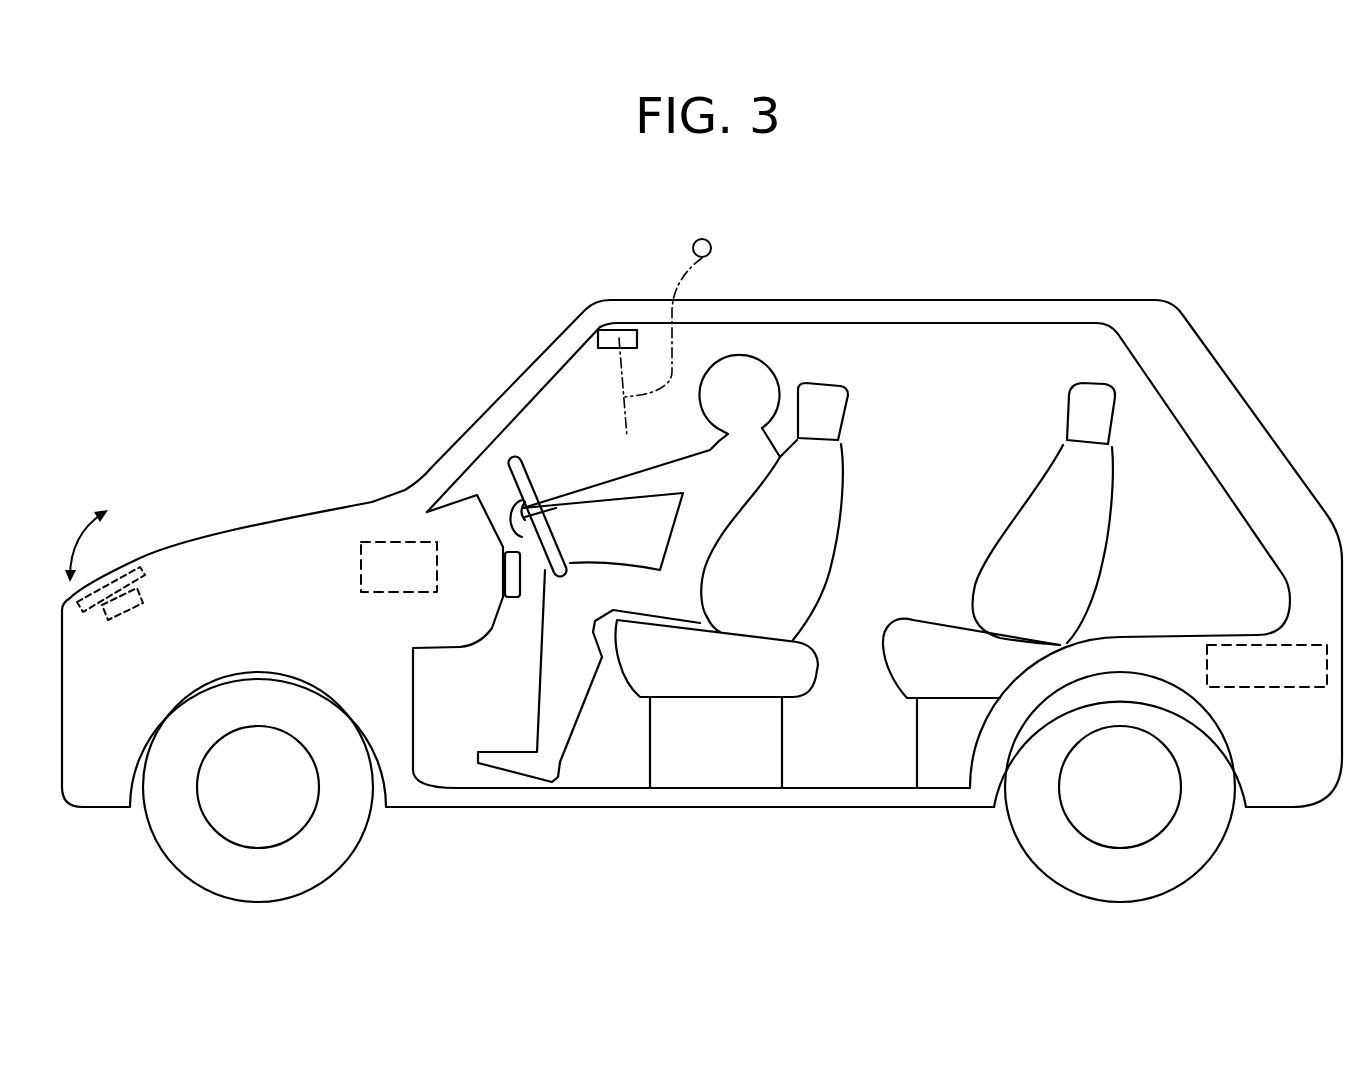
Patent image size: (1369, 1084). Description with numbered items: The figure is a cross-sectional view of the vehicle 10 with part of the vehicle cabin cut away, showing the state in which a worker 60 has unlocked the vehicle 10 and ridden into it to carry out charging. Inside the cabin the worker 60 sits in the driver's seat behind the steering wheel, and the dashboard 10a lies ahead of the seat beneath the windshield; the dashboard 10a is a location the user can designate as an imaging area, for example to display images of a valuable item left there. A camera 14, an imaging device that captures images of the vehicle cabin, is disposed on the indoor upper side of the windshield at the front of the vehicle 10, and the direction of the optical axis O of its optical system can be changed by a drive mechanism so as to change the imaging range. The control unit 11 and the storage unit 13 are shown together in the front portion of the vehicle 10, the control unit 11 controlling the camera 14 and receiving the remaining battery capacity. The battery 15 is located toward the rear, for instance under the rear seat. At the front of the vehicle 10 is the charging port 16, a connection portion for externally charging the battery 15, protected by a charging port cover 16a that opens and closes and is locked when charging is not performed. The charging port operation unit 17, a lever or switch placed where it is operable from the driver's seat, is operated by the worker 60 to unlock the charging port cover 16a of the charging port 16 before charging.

The vehicle 10 is at (967, 270).
The dashboard 10a is at (472, 495).
The control unit 11 is at (352, 504).
The storage unit 13 is at (393, 542).
The camera 14 is at (617, 330).
The battery 15 is at (1270, 688).
The charging port 16 is at (140, 612).
The charging port cover 16a is at (138, 572).
The charging port operation unit 17 is at (512, 598).
The worker 60 is at (758, 375).
The optical axis O is at (665, 338).